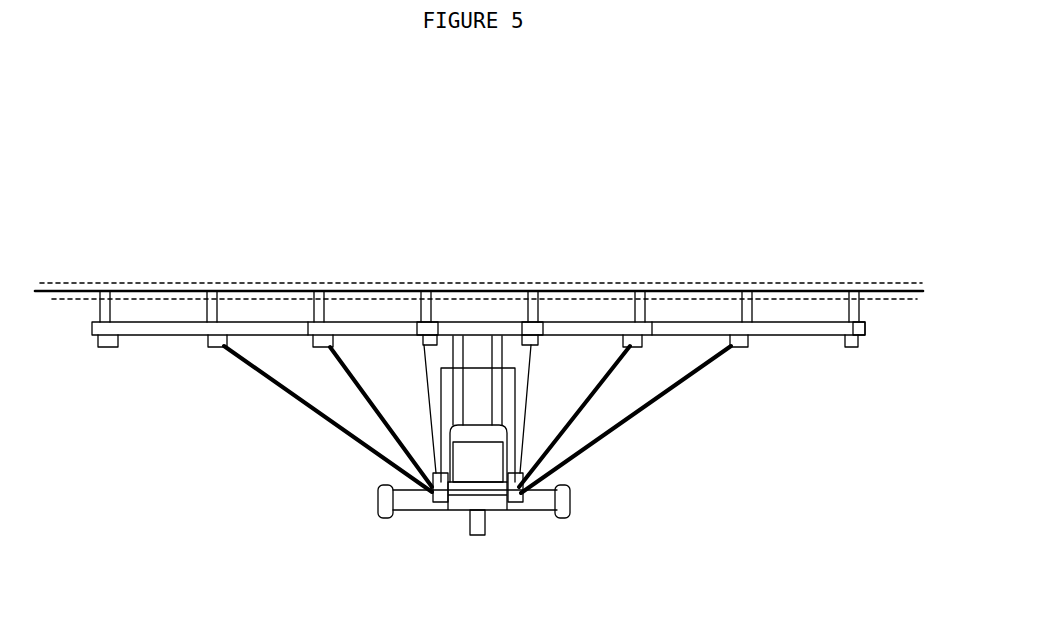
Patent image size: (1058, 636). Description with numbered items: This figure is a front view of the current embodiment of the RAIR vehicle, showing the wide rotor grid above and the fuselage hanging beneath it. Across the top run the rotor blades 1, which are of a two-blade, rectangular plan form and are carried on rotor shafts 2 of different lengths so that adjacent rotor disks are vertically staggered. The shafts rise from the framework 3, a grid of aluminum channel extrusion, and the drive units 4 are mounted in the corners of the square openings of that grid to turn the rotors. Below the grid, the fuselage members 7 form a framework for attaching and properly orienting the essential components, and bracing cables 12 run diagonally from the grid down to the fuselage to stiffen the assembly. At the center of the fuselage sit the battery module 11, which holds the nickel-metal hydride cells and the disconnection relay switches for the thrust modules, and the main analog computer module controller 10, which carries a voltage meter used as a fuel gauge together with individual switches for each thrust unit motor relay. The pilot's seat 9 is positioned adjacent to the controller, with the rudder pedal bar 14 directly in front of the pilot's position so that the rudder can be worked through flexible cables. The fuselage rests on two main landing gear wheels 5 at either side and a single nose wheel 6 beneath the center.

The rotor blades 1 is at (132, 291).
The rotor shafts 2 is at (855, 323).
The framework 3 is at (770, 327).
The drive units 4 is at (200, 345).
The main landing gear wheels 5 is at (390, 513).
The nose wheel 6 is at (478, 525).
The fuselage members 7 is at (455, 345).
The pilot's seat 9 is at (493, 435).
The main analog computer module controller 10 is at (472, 453).
The battery module 11 is at (483, 382).
The bracing cables 12 is at (531, 370).
The rudder pedal bar 14 is at (440, 503).